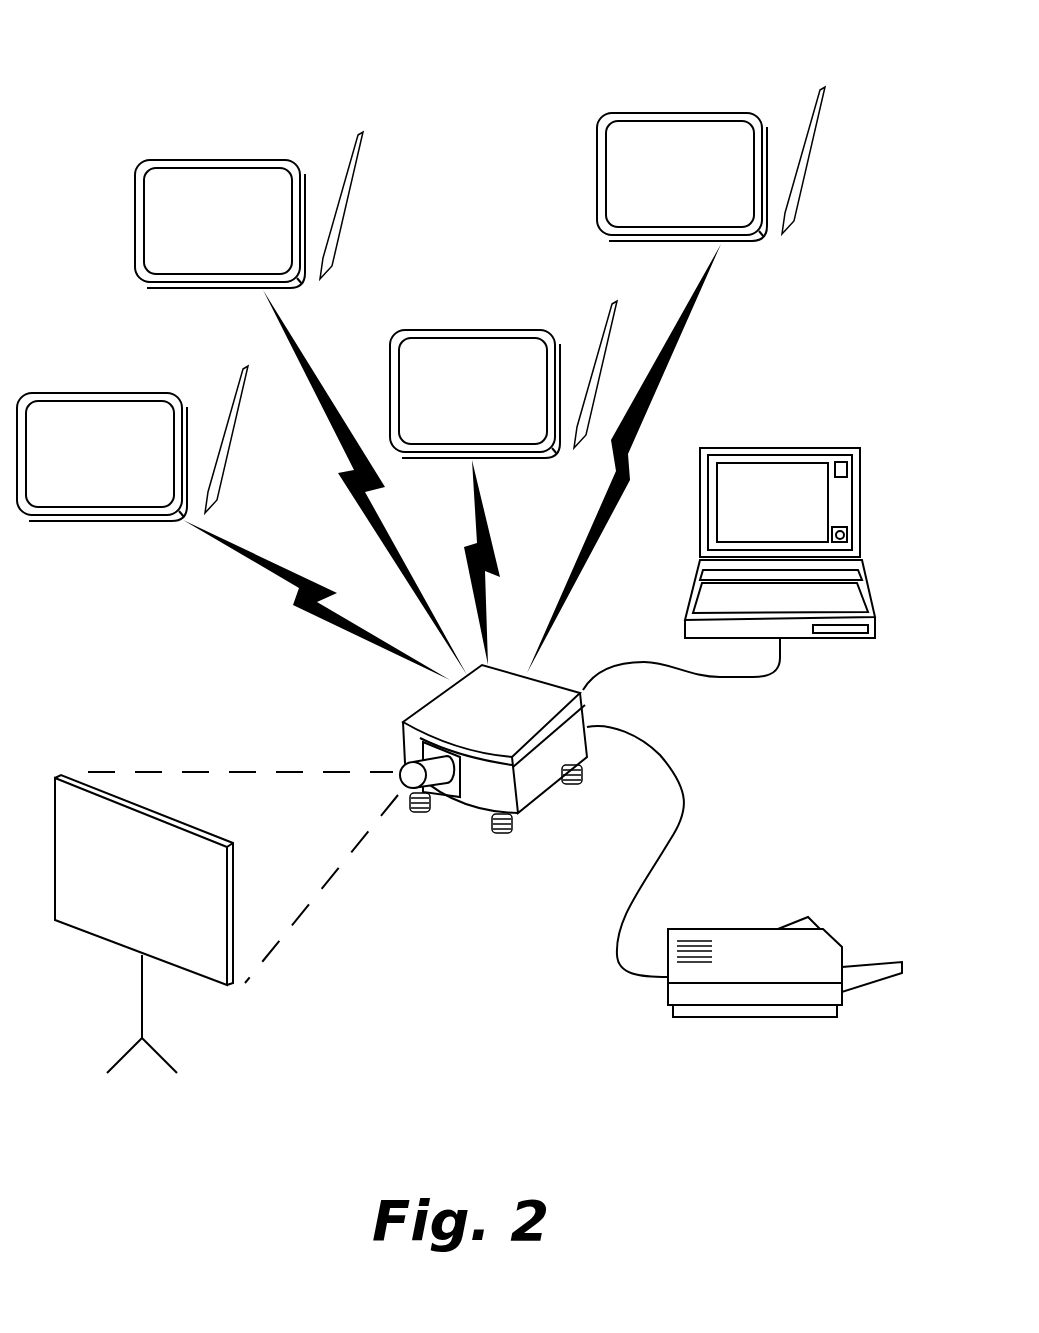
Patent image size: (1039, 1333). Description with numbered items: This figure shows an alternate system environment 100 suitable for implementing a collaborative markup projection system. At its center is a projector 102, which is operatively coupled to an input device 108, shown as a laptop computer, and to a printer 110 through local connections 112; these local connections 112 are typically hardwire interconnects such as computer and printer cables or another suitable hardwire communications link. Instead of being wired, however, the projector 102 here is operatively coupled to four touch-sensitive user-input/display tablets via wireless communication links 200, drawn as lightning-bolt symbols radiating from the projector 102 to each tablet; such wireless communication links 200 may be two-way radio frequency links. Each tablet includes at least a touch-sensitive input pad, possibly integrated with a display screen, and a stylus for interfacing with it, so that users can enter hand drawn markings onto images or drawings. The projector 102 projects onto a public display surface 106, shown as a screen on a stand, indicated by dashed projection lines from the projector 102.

The system environment 100 is at (104, 42).
The projector 102 is at (417, 716).
The public display surface 106 is at (100, 922).
The input device 108 is at (780, 447).
The printer 110 is at (827, 929).
The local connection 112 is at (723, 677).
The wireless communication link 200 is at (307, 612).